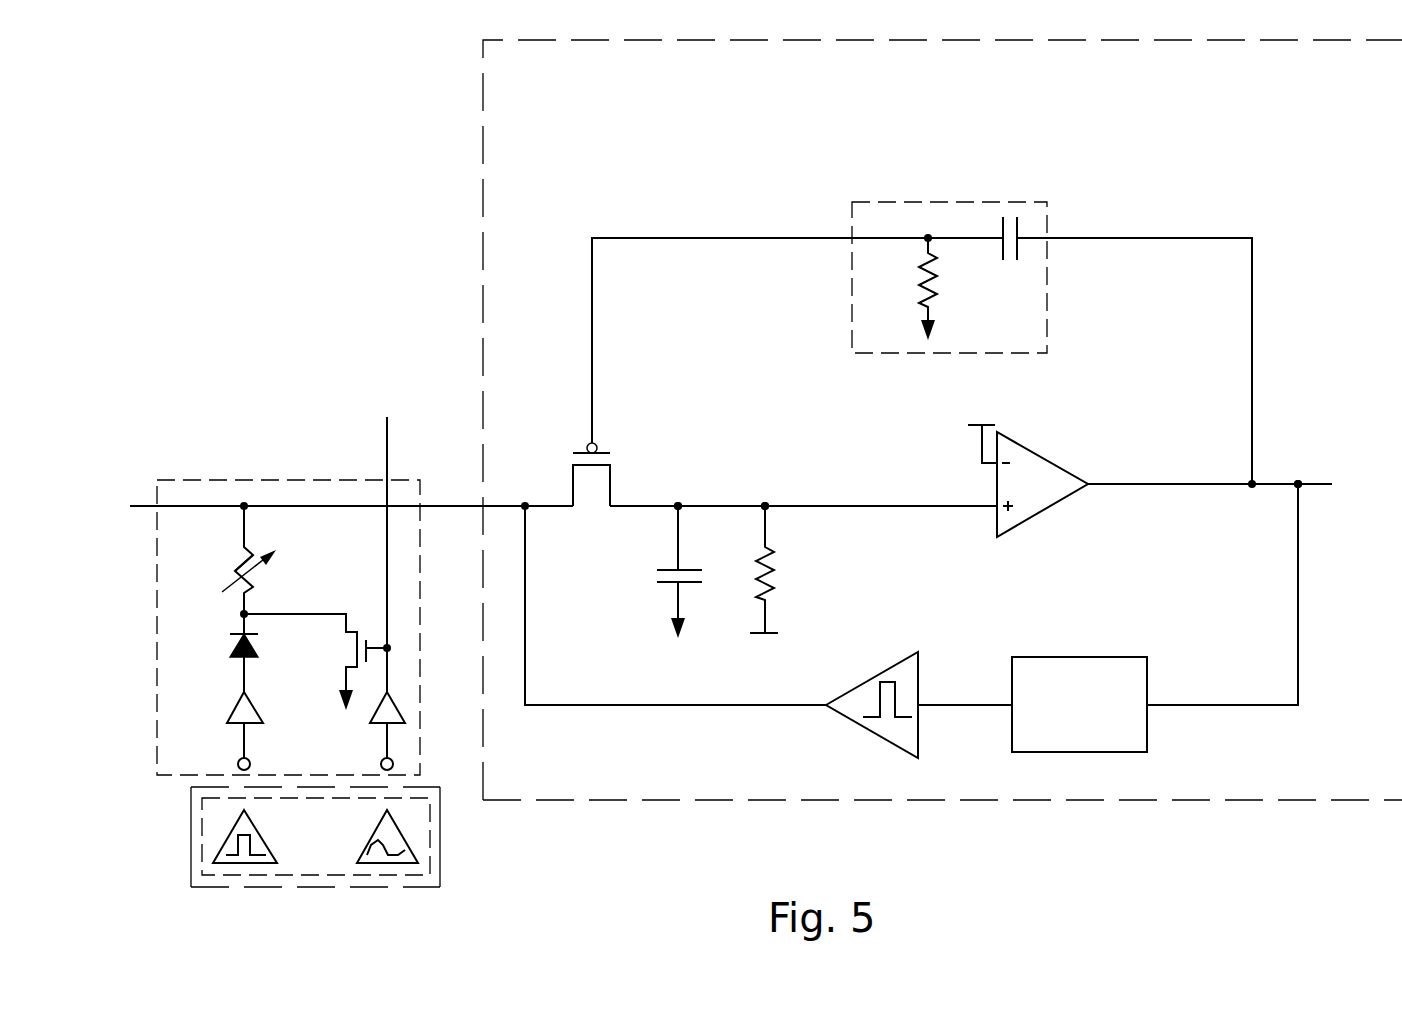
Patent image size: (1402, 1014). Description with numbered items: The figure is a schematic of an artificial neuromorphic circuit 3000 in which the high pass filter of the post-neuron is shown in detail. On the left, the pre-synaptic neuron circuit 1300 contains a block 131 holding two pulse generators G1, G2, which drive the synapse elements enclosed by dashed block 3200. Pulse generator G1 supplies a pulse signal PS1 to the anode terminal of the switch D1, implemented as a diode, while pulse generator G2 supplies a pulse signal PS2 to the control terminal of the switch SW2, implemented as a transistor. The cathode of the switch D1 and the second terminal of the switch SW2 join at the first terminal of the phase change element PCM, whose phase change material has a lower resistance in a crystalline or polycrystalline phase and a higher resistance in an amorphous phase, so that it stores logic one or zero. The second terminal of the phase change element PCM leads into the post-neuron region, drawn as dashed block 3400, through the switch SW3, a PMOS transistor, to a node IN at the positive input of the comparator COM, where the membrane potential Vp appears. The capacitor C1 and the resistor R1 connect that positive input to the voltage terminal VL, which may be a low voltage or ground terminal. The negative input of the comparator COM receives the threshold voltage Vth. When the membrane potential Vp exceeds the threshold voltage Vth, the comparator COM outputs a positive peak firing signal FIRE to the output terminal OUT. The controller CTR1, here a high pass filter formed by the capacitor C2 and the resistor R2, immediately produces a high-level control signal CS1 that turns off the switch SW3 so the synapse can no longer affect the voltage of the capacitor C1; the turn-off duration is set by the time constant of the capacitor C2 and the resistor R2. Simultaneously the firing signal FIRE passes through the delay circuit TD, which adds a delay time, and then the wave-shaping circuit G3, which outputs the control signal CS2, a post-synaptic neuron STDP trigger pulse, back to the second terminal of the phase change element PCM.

The artificial neuromorphic circuit 3000 is at (220, 76).
The readout/control circuit 3400 is at (483, 60).
The pixel circuit 3200 is at (276, 480).
The pre-synaptic neuron circuit 1300 is at (191, 793).
The light source 131 is at (202, 805).
The pulse generator G1 is at (230, 835).
The pulse generator G2 is at (400, 836).
The pulse signal PS1 is at (225, 853).
The pulse signal PS2 is at (405, 855).
The phase change element PCM is at (222, 560).
The switch D1 is at (223, 692).
The switch SW2 is at (324, 692).
The switch SW3 is at (587, 493).
The membrane potential Vp is at (674, 489).
The input node IN is at (765, 503).
The capacitor C1 is at (661, 572).
The resistor R1 is at (749, 569).
The voltage terminal VL is at (764, 656).
The control signal CS1 is at (850, 227).
The controller CTR1 is at (940, 202).
The resistor R2 is at (908, 289).
The capacitor C2 is at (1009, 257).
The threshold voltage Vth is at (978, 429).
The comparator COM is at (1042, 456).
The firing signal FIRE is at (1152, 470).
The output terminal OUT is at (1300, 482).
The wave-shaping circuit G3 is at (866, 682).
The delay circuit TD is at (1075, 657).
The control signal CS2 is at (783, 724).